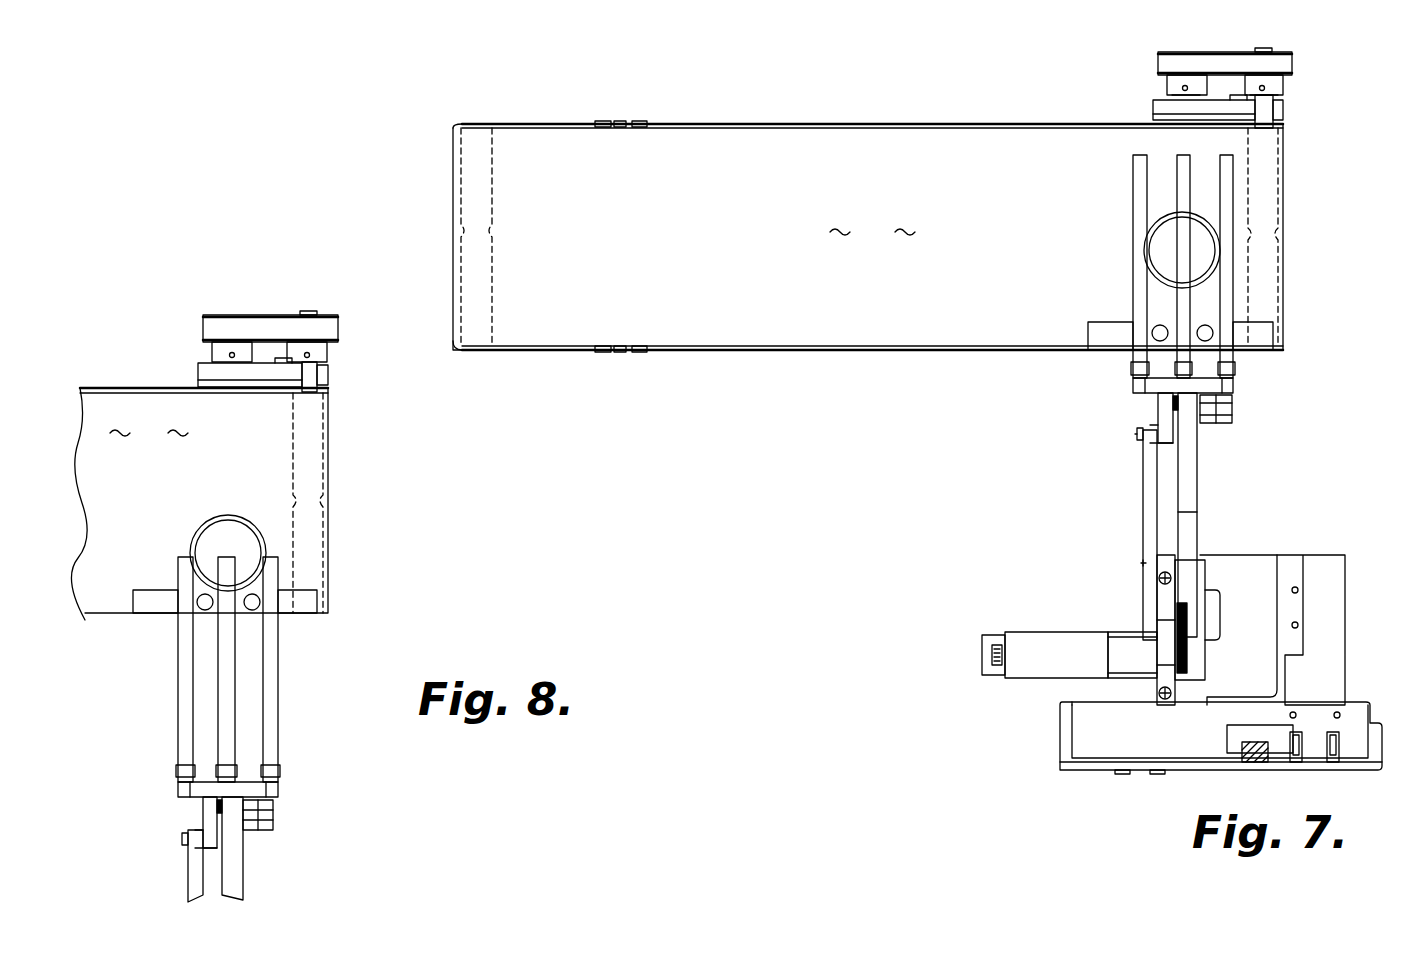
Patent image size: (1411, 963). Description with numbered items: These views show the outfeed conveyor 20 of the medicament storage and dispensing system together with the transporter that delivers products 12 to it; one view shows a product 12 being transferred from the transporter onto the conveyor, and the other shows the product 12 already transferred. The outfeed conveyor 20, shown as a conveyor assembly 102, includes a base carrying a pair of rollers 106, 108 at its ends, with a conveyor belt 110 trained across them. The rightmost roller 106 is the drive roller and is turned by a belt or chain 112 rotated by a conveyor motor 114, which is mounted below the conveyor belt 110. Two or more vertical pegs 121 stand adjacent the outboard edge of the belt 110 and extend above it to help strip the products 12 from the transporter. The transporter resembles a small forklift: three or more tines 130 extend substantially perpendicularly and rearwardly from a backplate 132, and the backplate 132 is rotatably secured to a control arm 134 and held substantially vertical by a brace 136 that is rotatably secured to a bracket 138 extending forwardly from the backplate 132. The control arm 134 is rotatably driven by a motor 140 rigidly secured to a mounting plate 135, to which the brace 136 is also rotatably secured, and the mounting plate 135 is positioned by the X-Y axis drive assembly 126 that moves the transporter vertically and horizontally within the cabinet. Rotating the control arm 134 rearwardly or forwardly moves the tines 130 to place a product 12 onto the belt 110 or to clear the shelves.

In FIG. 7, the product 12 is at (1153, 248).
In FIG. 8, the product 12 is at (228, 540).
In FIG. 7, the outfeed conveyor 20 is at (965, 100).
In FIG. 8, the outfeed conveyor 20 is at (125, 380).
In FIG. 7, the board holder assembly 102 is at (640, 95).
In FIG. 7, the roller 106 is at (1275, 158).
In FIG. 8, the roller 106 is at (320, 428).
In FIG. 7, the roller 108 is at (487, 215).
In FIG. 7, the conveyor belt 110 is at (868, 237).
In FIG. 8, the conveyor belt 110 is at (199, 504).
In FIG. 7, the belt or chain 112 is at (1225, 52).
In FIG. 8, the belt or chain 112 is at (275, 325).
In FIG. 7, the conveyor motor 114 is at (1167, 105).
In FIG. 8, the conveyor motor 114 is at (218, 372).
In FIG. 7, the vertical pegs 121 is at (1160, 333).
In FIG. 8, the vertical pegs 121 is at (205, 602).
In FIG. 7, the X-Y axis drive assembly 126 is at (1050, 762).
In FIG. 7, the tines 130 is at (1128, 190).
In FIG. 8, the tines 130 is at (173, 636).
In FIG. 7, the backplate 132 is at (1215, 383).
In FIG. 8, the backplate 132 is at (260, 787).
In FIG. 7, the control arm 134 is at (1188, 472).
In FIG. 8, the control arm 134 is at (233, 875).
In FIG. 7, the mounting plate 135 is at (1357, 630).
In FIG. 7, the brace 136 is at (1150, 490).
In FIG. 8, the brace 136 is at (195, 893).
In FIG. 7, the bracket 138 is at (1165, 420).
In FIG. 8, the bracket 138 is at (210, 822).
In FIG. 7, the motor 140 is at (1045, 610).